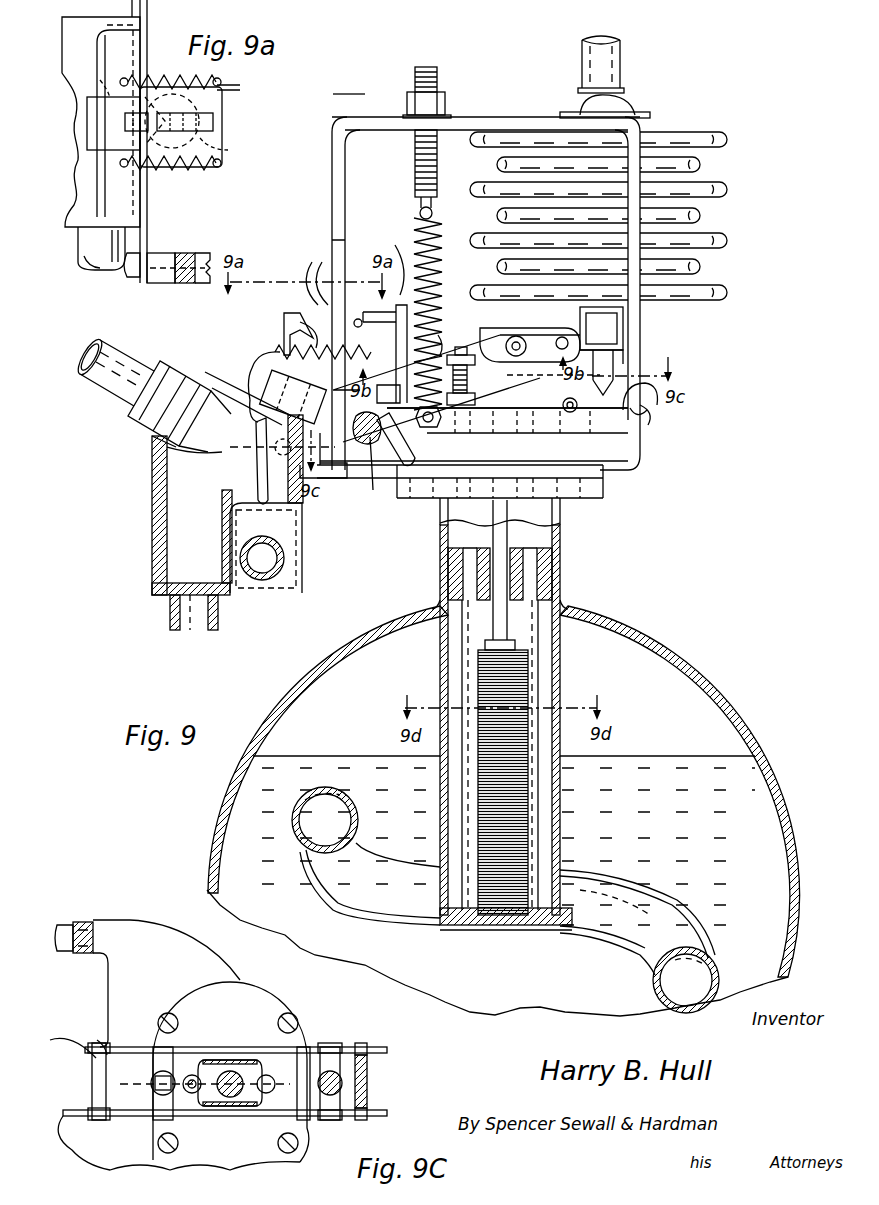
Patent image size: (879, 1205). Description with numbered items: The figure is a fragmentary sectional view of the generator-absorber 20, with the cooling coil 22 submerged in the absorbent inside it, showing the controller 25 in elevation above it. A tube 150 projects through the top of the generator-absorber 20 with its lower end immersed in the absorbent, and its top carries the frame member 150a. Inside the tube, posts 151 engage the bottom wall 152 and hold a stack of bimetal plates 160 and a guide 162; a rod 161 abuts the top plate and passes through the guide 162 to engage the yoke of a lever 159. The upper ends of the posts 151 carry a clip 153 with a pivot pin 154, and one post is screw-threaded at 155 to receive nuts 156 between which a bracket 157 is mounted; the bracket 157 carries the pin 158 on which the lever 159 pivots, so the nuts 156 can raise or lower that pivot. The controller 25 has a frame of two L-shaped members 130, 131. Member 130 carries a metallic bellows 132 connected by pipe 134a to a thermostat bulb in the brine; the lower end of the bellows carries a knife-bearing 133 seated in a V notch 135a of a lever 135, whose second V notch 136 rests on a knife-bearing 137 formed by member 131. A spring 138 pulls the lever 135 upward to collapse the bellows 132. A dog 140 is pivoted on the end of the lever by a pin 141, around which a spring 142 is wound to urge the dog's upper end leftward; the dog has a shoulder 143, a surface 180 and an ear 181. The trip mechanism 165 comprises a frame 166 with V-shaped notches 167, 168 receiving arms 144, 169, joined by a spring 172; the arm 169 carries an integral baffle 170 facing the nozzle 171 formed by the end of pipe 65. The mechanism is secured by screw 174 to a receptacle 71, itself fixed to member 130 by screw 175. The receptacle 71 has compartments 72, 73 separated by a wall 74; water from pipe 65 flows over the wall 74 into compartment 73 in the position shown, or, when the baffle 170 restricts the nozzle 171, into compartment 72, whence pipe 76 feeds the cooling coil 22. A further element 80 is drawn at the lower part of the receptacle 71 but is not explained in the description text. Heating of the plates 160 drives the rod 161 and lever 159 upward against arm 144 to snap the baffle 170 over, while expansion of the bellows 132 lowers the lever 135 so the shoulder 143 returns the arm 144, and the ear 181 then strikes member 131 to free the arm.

In FIG. 9, the generator-absorber 20 is at (667, 657).
In FIG. 9, the coil 22 is at (323, 898).
In FIG. 9, the controller 25 is at (486, 98).
In FIG. 9, the pipe 65 is at (97, 387).
In FIG. 9A, the receptacle 71 is at (62, 20).
In FIG. 9, the receptacle 71 is at (152, 487).
In FIG. 9, the compartment 72 is at (173, 538).
In FIG. 9, the compartment 73 is at (247, 507).
In FIG. 9, the wall 74 is at (222, 515).
In FIG. 9, the pipe 76 is at (170, 627).
In FIG. 9A, the pipe 80 is at (78, 252).
In FIG. 9, the pipe 80 is at (262, 582).
In FIG. 9A, the L-shaped member 130 is at (180, 255).
In FIG. 9, the L-shaped member 130 is at (332, 160).
In FIG. 9C, the L-shaped member 130 is at (77, 922).
In FIG. 9A, the L-shaped member 131 is at (198, 255).
In FIG. 9, the L-shaped member 131 is at (642, 340).
In FIG. 9C, the L-shaped member 131 is at (165, 917).
In FIG. 9, the metallic bellows 132 is at (728, 213).
In FIG. 9, the knife-bearing 133 is at (612, 395).
In FIG. 9C, the knife-bearing 133 is at (332, 1045).
In FIG. 9, the pipe 134a is at (622, 55).
In FIG. 9, the lever 135 is at (607, 427).
In FIG. 9C, the lever 135 is at (260, 1047).
In FIG. 9, the V notch 135a is at (657, 405).
In FIG. 9, the V notch 136 is at (643, 415).
In FIG. 9, the knife-bearing 137 is at (640, 432).
In FIG. 9C, the knife-bearing 137 is at (362, 1044).
In FIG. 9, the spring 138 is at (420, 217).
In FIG. 9C, the spring 138 is at (155, 1085).
In FIG. 9A, the dog 140 is at (226, 88).
In FIG. 9, the dog 140 is at (408, 470).
In FIG. 9C, the dog 140 is at (90, 1085).
In FIG. 9, the pin 141 is at (375, 480).
In FIG. 9C, the pin 141 is at (102, 1045).
In FIG. 9, the spring 142 is at (407, 438).
In FIG. 9C, the spring 142 is at (88, 1053).
In FIG. 9, the shoulder 143 is at (398, 306).
In FIG. 9A, the arm 144 is at (222, 107).
In FIG. 9, the arm 144 is at (358, 318).
In FIG. 9, the tube 150 is at (560, 575).
In FIG. 9, the frame member 150a is at (606, 487).
In FIG. 9, the posts 151 is at (460, 637).
In FIG. 9C, the posts 151 is at (282, 1072).
In FIG. 9, the bottom wall 152 is at (502, 922).
In FIG. 9, the clip 153 is at (523, 388).
In FIG. 9C, the clip 153 is at (262, 1094).
In FIG. 9, the pivot pin 154 is at (525, 340).
In FIG. 9, the screw-threaded portion 155 is at (462, 345).
In FIG. 9C, the screw-threaded portion 155 is at (190, 1075).
In FIG. 9, the nuts 156 is at (505, 330).
In FIG. 9, the bracket 157 is at (447, 330).
In FIG. 9, the pin 158 is at (562, 337).
In FIG. 9, the lever 159 is at (580, 340).
In FIG. 9, the bimetal plates 160 is at (477, 677).
In FIG. 9, the rod 161 is at (500, 575).
In FIG. 9C, the rod 161 is at (228, 1071).
In FIG. 9, the guide 162 is at (547, 552).
In FIG. 9, the trip mechanism 165 is at (313, 306).
In FIG. 9A, the frame 166 is at (125, 122).
In FIG. 9, the frame 166 is at (284, 320).
In FIG. 9, the V-shaped notch 167 is at (316, 336).
In FIG. 9, the V-shaped notch 168 is at (355, 322).
In FIG. 9A, the arm 169 is at (174, 112).
In FIG. 9, the arm 169 is at (272, 350).
In FIG. 9A, the baffle 170 is at (87, 103).
In FIG. 9, the baffle 170 is at (256, 470).
In FIG. 9, the nozzle 171 is at (208, 405).
In FIG. 9A, the spring 172 is at (170, 68).
In FIG. 9, the spring 172 is at (325, 360).
In FIG. 9, the screw 174 is at (257, 420).
In FIG. 9A, the screw 175 is at (124, 270).
In FIG. 9, the screw 175 is at (275, 447).
In FIG. 9C, the screw 175 is at (93, 932).
In FIG. 9, the surface 180 is at (416, 252).
In FIG. 9, the ear 181 is at (368, 462).